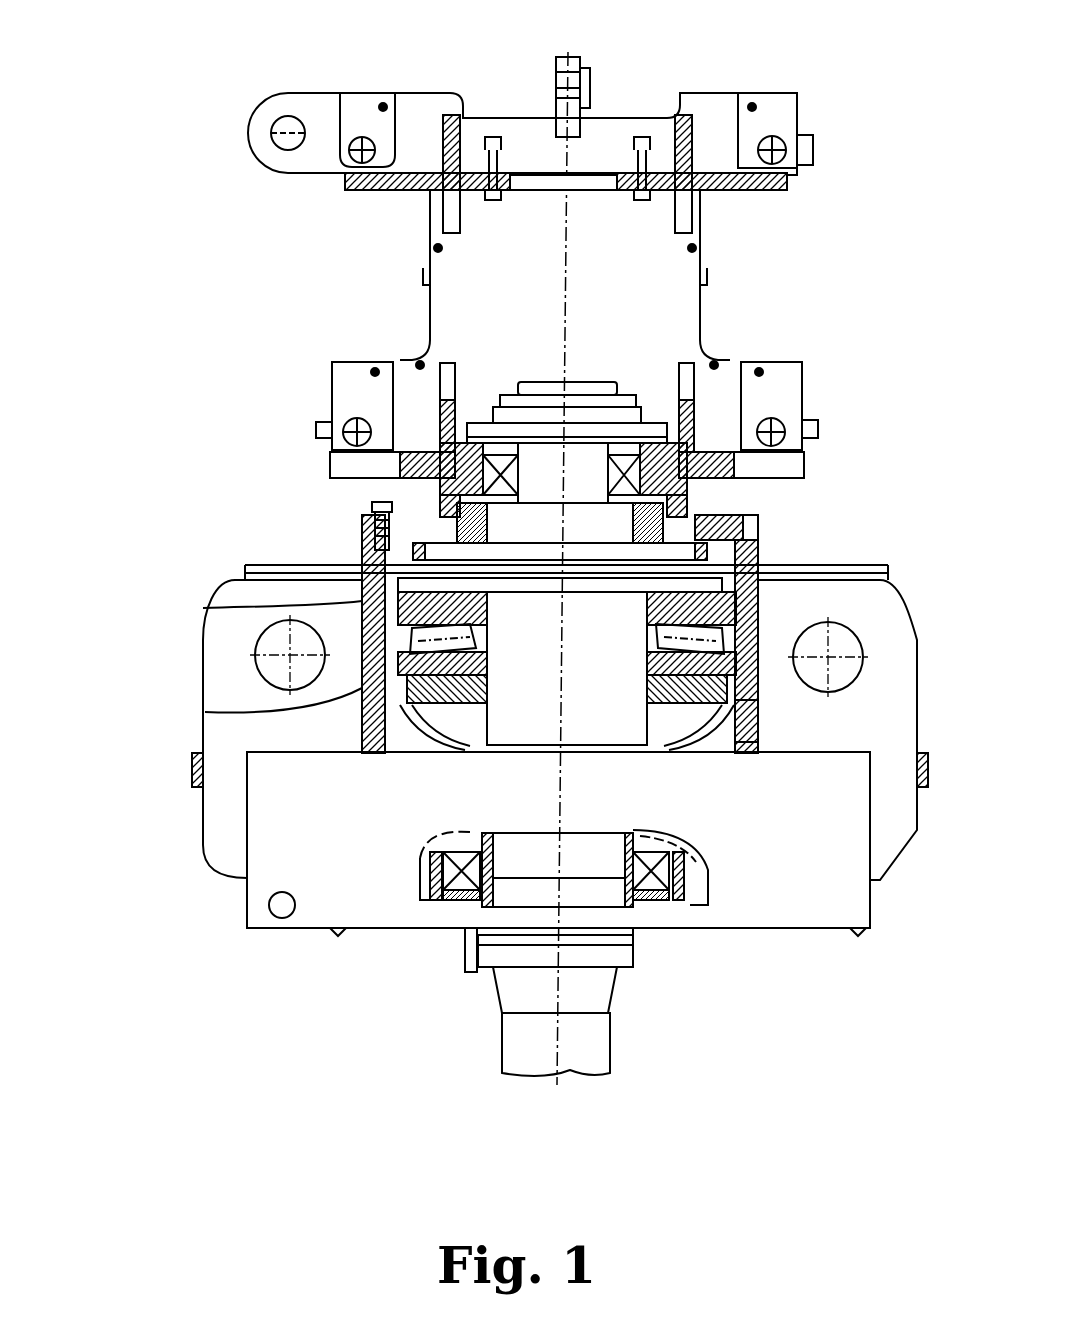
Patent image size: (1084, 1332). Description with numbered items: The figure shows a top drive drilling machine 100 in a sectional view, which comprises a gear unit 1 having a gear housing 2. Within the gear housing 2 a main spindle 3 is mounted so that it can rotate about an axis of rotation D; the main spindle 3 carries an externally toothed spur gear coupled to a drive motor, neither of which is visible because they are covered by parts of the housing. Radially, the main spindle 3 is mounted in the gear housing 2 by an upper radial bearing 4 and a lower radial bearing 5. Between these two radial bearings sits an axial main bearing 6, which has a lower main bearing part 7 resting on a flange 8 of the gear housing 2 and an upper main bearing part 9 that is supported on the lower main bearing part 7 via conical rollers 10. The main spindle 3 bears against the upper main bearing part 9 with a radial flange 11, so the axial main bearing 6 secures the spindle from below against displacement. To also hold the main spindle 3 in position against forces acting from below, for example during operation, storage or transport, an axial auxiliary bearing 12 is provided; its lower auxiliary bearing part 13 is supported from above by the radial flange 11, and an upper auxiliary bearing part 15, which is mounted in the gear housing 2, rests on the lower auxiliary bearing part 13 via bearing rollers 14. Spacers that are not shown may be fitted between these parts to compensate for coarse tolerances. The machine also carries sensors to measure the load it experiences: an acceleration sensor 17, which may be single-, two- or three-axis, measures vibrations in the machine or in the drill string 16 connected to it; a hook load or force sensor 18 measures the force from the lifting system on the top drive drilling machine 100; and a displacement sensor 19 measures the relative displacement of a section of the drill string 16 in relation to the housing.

The top drive drilling machine 100 is at (128, 140).
The gear unit 1 is at (140, 520).
The gear housing 2 is at (362, 560).
The main spindle 3 is at (589, 675).
The upper radial bearing 4 is at (470, 440).
The lower radial bearing 5 is at (672, 912).
The axial main bearing 6 is at (780, 612).
The lower main bearing part 7 is at (758, 700).
The flange 8 is at (758, 742).
The upper main bearing part 9 is at (767, 587).
The conical rollers 10 is at (205, 712).
The radial flange 11 is at (203, 608).
The axial auxiliary bearing 12 is at (412, 500).
The lower auxiliary bearing part 13 is at (500, 538).
The bearing rollers 14 is at (753, 522).
The upper auxiliary bearing part 15 is at (316, 432).
The drill string 16 is at (611, 1045).
The acceleration sensor 17 is at (268, 910).
The force sensor 18 is at (595, 83).
The displacement sensor 19 is at (463, 955).
The axis of rotation D is at (557, 1060).